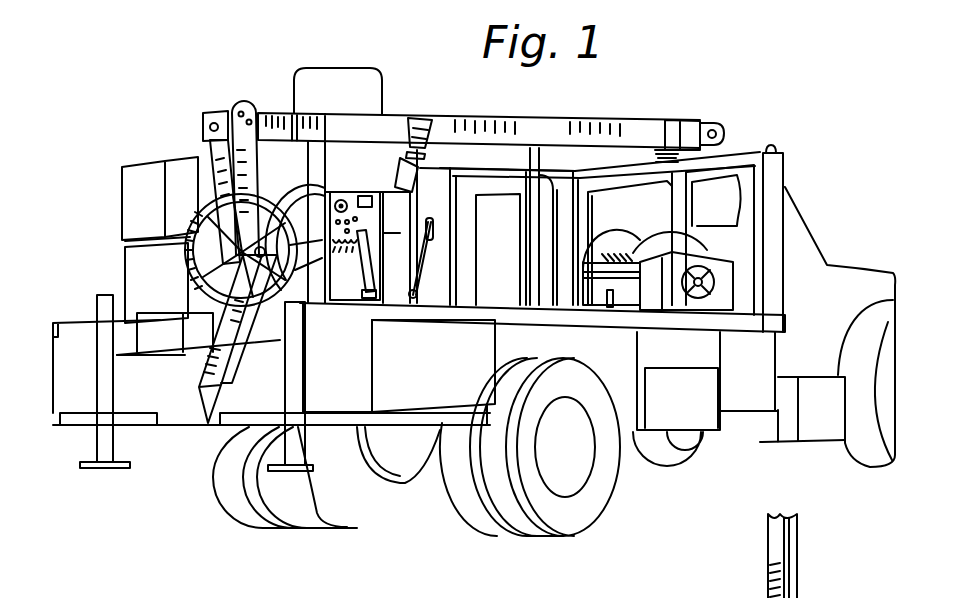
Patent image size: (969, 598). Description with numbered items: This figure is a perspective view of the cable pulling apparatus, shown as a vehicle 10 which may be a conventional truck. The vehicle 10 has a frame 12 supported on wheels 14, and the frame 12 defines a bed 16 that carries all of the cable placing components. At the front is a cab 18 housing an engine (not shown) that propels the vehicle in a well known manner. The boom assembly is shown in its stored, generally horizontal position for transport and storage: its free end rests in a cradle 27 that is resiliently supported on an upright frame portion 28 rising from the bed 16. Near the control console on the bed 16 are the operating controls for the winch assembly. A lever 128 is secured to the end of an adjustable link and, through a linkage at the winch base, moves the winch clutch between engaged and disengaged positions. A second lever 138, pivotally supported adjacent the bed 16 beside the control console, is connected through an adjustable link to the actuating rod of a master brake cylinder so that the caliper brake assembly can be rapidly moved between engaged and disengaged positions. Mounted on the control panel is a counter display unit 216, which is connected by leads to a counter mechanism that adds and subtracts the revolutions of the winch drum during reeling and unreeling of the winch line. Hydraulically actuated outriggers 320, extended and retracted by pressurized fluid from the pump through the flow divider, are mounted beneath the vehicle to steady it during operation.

The vehicle 10 is at (188, 65).
The frame 12 is at (625, 427).
The wheels 14 is at (567, 530).
The bed 16 is at (77, 321).
The cab 18 is at (793, 233).
The cradle 27 is at (675, 132).
The upright frame portion 28 is at (733, 158).
The lever 128 is at (362, 280).
The lever 138 is at (362, 280).
The counter display unit 216 is at (367, 188).
The outriggers 320 is at (115, 468).